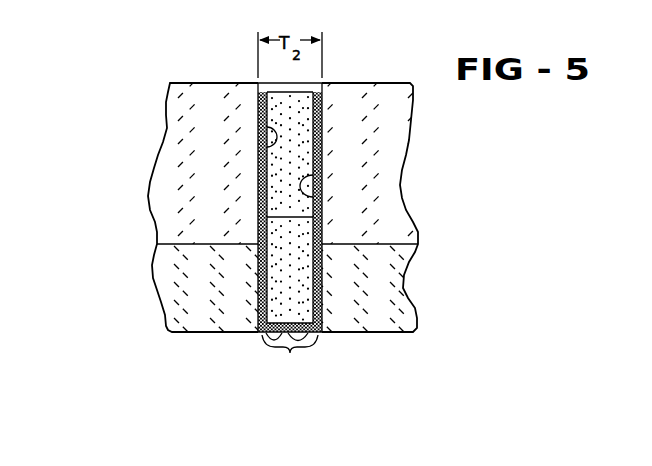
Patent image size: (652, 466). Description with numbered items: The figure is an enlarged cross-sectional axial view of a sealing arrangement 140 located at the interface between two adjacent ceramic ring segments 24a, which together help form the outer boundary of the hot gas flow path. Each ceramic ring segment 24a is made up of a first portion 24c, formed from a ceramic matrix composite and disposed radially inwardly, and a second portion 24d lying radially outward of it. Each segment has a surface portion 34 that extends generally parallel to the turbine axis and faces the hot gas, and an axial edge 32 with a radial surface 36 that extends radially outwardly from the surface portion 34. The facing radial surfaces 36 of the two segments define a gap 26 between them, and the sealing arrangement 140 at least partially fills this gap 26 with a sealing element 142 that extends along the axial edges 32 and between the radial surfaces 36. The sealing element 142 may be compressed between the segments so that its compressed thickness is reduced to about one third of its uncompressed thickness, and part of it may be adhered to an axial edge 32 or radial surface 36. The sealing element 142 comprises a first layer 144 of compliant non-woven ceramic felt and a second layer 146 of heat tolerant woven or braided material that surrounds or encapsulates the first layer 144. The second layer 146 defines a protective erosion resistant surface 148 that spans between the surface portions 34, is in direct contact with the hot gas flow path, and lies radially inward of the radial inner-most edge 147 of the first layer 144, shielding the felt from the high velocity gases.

The ceramic ring segment 24a is at (130, 342).
The first portion 24c is at (150, 280).
The second portion 24d is at (154, 180).
The gap 26 is at (287, 217).
The axial edge 32 is at (265, 338).
The surface portion 34 is at (185, 335).
The radial surface 36 is at (258, 128).
The sealing arrangement 140 is at (290, 357).
The sealing element 142 is at (248, 276).
The first layer 144 is at (300, 130).
The second layer 146 is at (324, 288).
The radial inner-most edge 147 is at (278, 312).
The erosion resistant surface 148 is at (323, 297).